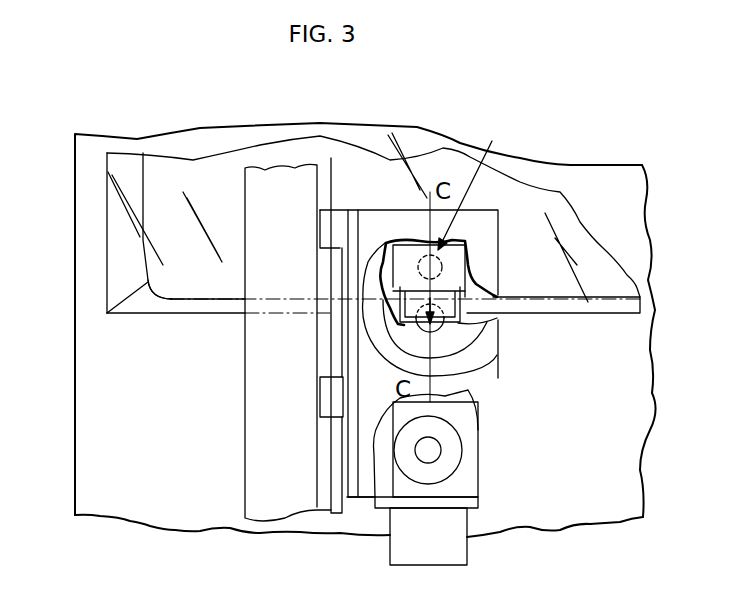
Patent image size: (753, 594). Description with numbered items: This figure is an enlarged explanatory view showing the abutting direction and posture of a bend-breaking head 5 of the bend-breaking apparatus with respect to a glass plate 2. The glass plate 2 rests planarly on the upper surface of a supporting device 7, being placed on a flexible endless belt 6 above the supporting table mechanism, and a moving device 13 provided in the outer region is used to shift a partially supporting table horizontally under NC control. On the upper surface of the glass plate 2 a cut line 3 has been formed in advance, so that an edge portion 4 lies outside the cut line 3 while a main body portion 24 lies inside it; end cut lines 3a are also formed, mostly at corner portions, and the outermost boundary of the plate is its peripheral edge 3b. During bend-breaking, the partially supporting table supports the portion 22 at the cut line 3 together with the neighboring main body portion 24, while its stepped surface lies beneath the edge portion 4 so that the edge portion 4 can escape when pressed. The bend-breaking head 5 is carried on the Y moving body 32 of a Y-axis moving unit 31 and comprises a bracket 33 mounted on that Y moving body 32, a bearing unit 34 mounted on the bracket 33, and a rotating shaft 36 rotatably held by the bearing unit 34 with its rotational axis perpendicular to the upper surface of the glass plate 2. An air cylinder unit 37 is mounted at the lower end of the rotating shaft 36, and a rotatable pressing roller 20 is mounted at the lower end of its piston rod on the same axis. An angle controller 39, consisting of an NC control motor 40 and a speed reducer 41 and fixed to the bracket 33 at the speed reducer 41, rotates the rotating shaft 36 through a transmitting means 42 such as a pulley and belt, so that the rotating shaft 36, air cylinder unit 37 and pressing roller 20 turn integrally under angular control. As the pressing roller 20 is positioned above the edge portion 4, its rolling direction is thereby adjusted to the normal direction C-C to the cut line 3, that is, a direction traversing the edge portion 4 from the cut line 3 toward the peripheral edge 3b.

The glass plate 2 is at (188, 238).
The cut line 3 is at (170, 300).
The end cut line 3a is at (122, 300).
The peripheral edge 3b is at (107, 190).
The edge portion 4 is at (235, 305).
The bend-breaking head 5 is at (468, 183).
The endless belt 6 is at (91, 442).
The supporting device 7 is at (620, 408).
The moving device 13 is at (338, 427).
The pressing roller 20 is at (448, 290).
The portion at the cut line 22 is at (497, 298).
The main body portion 24 is at (545, 198).
The Y-axis moving unit 31 is at (270, 400).
The Y moving body 32 is at (343, 370).
The bracket 33 is at (487, 373).
The bearing unit 34 is at (385, 263).
The rotating shaft 36 is at (440, 323).
The air cylinder unit 37 is at (412, 240).
The angle controller 39 is at (478, 488).
The NC control motor 40 is at (443, 552).
The speed reducer 41 is at (468, 472).
The transmitting means 42 is at (472, 432).